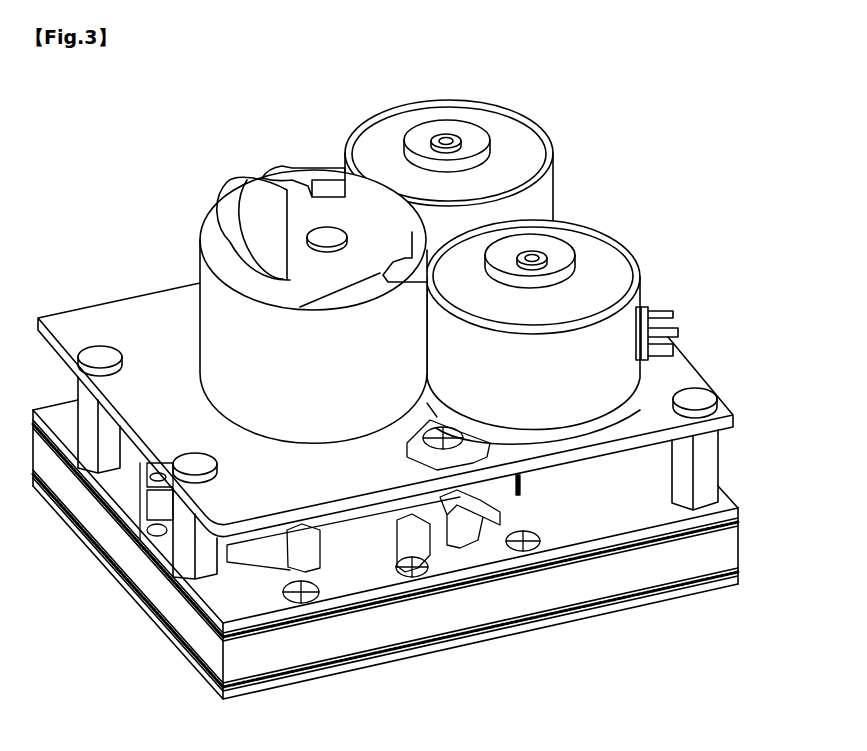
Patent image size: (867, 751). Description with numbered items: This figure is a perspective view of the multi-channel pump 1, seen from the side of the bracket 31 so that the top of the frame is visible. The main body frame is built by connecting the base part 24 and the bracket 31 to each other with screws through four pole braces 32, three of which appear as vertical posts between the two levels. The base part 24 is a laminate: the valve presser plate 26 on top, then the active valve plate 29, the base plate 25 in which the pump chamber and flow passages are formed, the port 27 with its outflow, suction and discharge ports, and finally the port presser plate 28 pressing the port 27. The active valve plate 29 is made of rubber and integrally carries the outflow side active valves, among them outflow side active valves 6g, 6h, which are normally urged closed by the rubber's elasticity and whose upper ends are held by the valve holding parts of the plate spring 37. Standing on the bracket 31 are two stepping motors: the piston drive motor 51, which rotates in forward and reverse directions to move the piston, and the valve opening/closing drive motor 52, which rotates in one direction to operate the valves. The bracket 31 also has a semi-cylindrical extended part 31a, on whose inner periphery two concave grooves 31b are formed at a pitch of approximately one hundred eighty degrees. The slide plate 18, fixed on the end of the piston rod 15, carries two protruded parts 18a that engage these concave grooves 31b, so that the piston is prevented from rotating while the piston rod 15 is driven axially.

The pump 1 is at (427, 406).
The piston rod 15 is at (325, 232).
The slide plate 18 is at (270, 240).
The protruded part 18a is at (263, 283).
The base part 24 is at (436, 549).
The base plate 25 is at (730, 545).
The valve presser plate 26 is at (730, 513).
The port 27 is at (738, 570).
The port presser plate 28 is at (795, 502).
The active valve plate 29 is at (738, 524).
The bracket 31 is at (137, 327).
The extended part 31a is at (223, 317).
The concave groove 31b is at (285, 167).
The pole brace 32 is at (43, 408).
The plate spring 37 is at (468, 556).
The piston drive motor 51 is at (580, 248).
The valve opening/closing drive motor 52 is at (522, 145).
The outflow side active valve 6g is at (402, 560).
The outflow side active valve 6h is at (297, 565).